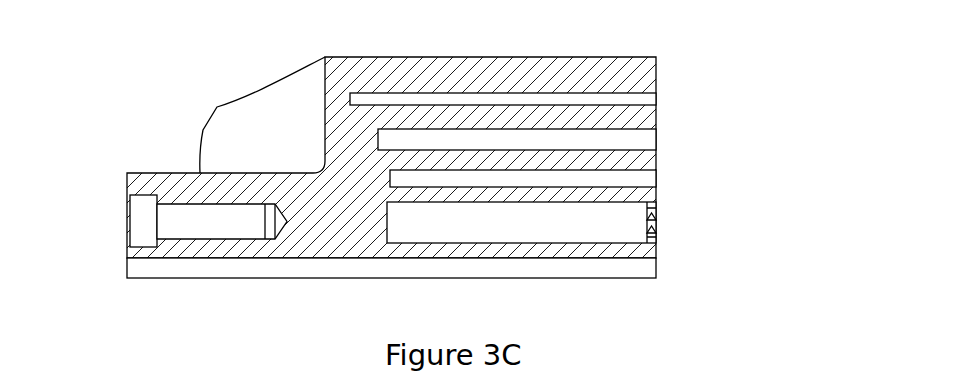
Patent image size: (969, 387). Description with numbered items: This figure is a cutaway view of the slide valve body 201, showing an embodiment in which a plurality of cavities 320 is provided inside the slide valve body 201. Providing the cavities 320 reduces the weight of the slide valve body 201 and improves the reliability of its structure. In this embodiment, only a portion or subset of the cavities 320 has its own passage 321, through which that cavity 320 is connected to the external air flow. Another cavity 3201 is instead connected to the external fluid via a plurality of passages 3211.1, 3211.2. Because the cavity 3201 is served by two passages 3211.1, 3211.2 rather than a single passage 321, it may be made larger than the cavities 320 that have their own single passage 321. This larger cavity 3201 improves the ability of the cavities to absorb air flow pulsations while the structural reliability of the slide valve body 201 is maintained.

The slide valve body 201 is at (246, 57).
The cavity 320 is at (573, 97).
The passage 321 is at (658, 97).
The cavity 3201 is at (630, 228).
The passage 3211.1 is at (653, 210).
The passage 3211.2 is at (655, 236).